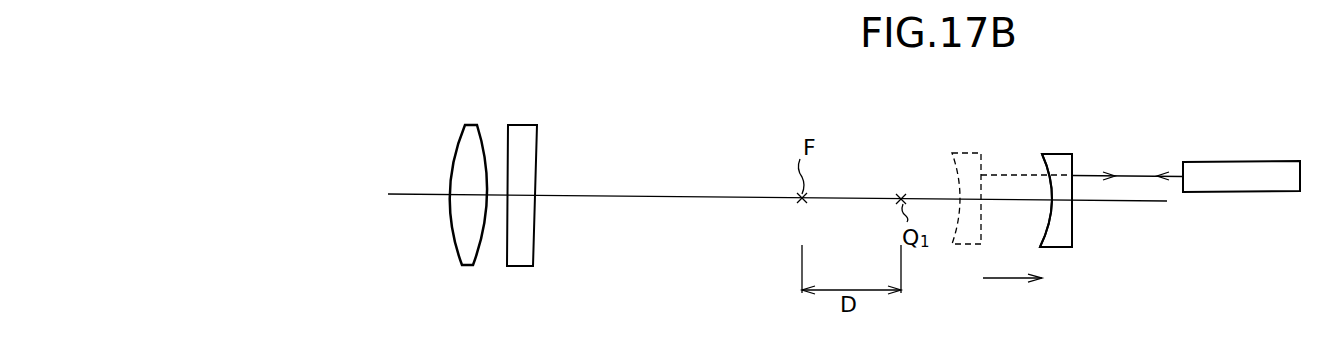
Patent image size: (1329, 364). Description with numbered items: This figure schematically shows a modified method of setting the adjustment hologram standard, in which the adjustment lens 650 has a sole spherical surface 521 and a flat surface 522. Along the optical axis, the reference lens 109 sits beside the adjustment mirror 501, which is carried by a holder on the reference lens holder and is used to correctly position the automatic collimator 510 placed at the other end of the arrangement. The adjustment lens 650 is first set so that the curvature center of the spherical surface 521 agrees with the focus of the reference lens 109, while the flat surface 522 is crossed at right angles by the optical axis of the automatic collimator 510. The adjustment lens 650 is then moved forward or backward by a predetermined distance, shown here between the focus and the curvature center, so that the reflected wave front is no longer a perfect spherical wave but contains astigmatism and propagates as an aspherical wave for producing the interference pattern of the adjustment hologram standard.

The reference lens 109 is at (467, 130).
The adjustment mirror 501 is at (525, 135).
The automatic collimator 510 is at (1243, 172).
The spherical surface 521 is at (1042, 156).
The flat surface 522 is at (1072, 240).
The adjustment lens 650 is at (963, 152).